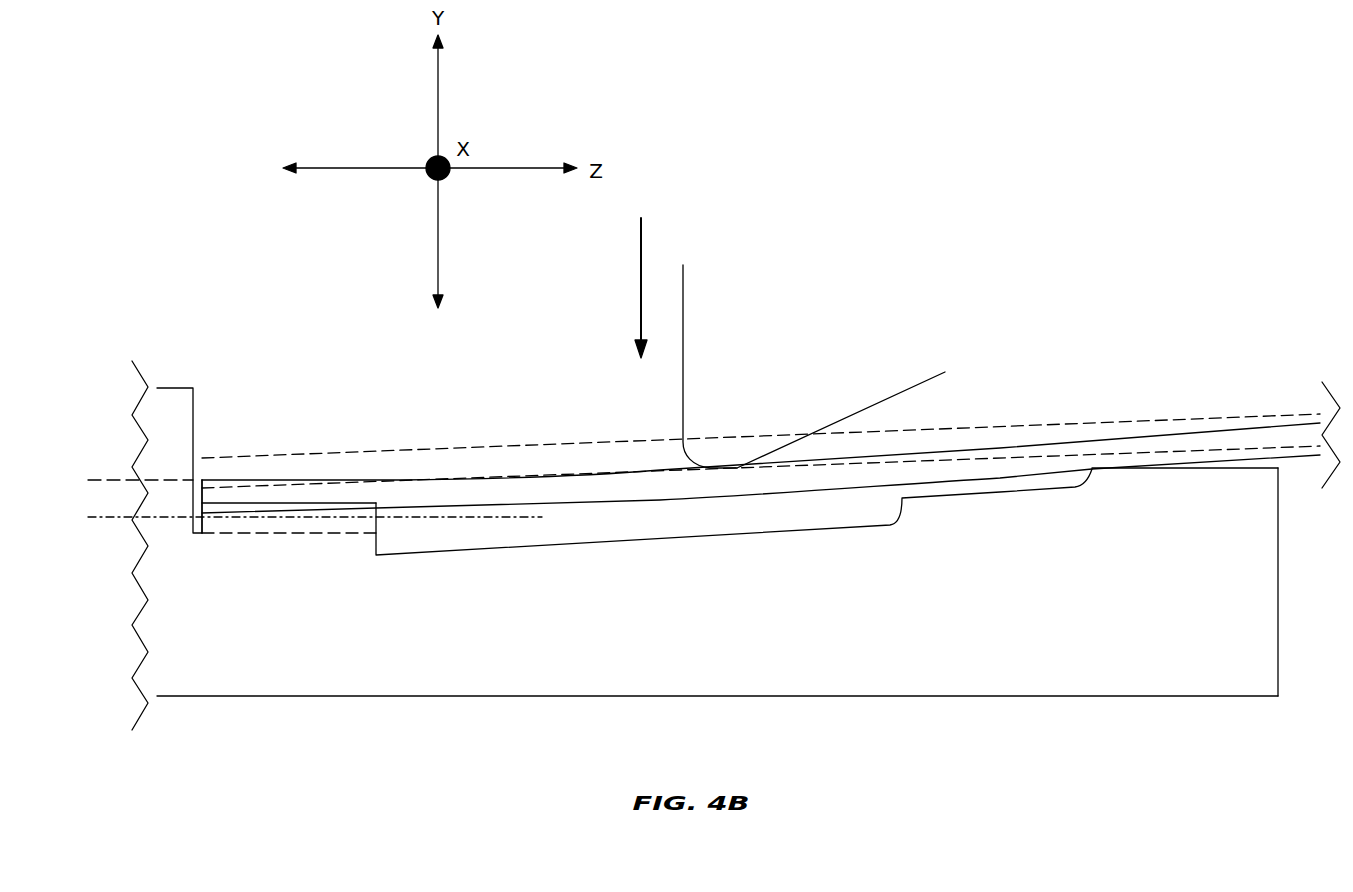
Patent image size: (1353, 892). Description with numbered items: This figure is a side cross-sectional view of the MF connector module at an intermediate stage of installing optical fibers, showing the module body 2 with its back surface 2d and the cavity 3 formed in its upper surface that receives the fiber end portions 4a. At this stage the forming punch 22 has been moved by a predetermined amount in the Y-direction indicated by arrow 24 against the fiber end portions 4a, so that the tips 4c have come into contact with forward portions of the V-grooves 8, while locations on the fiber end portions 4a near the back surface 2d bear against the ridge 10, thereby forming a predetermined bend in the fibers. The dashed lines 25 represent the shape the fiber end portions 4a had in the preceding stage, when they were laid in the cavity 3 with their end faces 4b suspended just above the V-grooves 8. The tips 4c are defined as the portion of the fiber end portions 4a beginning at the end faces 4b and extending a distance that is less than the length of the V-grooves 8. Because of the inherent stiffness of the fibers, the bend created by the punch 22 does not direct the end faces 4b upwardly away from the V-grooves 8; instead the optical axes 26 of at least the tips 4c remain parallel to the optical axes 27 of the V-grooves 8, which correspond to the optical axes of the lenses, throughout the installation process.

The module body 2 is at (437, 665).
The back surface 2d is at (1278, 641).
The cavity 3 is at (822, 558).
The fiber end portions 4a is at (539, 486).
The end faces 4b is at (203, 496).
The tips 4c is at (243, 495).
The V-grooves 8 is at (386, 527).
The ridge 10 is at (1088, 470).
The forming punch 22 is at (910, 389).
The arrow 24 is at (640, 306).
The dashed lines 25 is at (377, 483).
The optical axes of the tips 26 is at (113, 480).
The optical axes of the V-grooves 27 is at (112, 518).